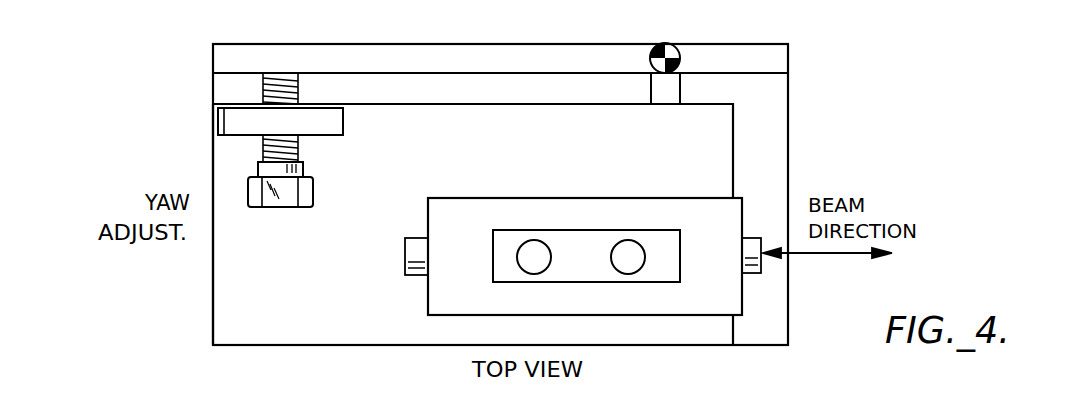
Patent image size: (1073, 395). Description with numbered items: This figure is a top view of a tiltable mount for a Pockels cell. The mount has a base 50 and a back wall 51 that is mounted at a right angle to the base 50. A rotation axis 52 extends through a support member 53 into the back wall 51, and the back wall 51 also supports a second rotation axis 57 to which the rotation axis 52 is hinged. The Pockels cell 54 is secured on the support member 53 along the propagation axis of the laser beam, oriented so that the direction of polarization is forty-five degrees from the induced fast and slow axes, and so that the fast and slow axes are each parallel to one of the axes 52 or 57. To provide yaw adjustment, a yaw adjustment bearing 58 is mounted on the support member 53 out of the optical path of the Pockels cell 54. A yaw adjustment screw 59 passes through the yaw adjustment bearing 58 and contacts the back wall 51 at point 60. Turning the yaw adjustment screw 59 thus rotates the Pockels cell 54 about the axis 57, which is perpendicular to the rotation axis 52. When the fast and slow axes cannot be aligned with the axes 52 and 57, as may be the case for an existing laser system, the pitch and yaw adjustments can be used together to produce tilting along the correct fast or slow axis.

The base 50 is at (780, 143).
The back wall 51 is at (728, 48).
The rotation axis 52 is at (672, 88).
The support member 53 is at (209, 279).
The Pockels cell 54 is at (450, 198).
The rotation axis 57 is at (662, 44).
The yaw adjustment bearing 58 is at (240, 120).
The yaw adjustment screw 59 is at (298, 207).
The point 60 is at (300, 78).